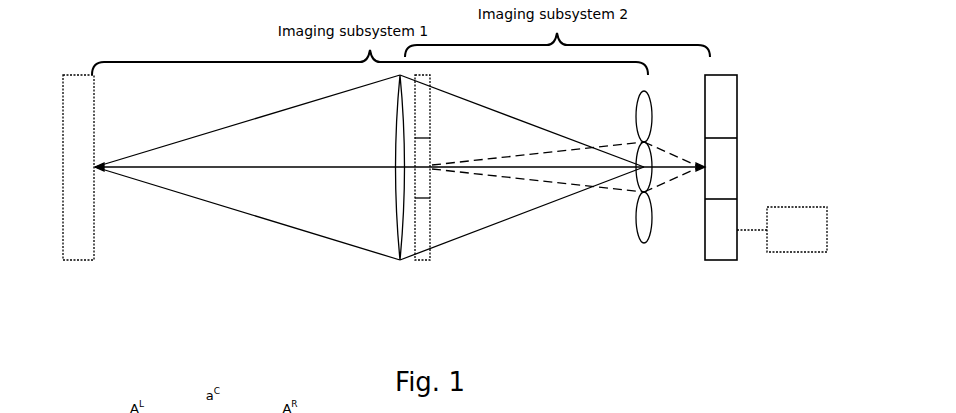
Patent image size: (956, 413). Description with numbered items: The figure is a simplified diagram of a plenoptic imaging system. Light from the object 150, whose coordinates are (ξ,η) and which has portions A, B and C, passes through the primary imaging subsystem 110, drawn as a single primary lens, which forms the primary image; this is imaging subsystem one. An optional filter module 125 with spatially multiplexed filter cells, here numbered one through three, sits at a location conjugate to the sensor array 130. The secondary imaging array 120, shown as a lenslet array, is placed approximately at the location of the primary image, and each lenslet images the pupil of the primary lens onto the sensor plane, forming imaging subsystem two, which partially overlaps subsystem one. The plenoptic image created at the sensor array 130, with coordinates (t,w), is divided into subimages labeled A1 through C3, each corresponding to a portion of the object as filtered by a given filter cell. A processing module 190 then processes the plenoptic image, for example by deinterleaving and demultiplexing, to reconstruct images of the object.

The object 150 is at (79, 260).
The primary imaging subsystem 110 is at (400, 260).
The filter module 125 is at (431, 237).
The secondary imaging array 120 is at (644, 243).
The sensor array 130 is at (720, 260).
The processing module 190 is at (782, 229).